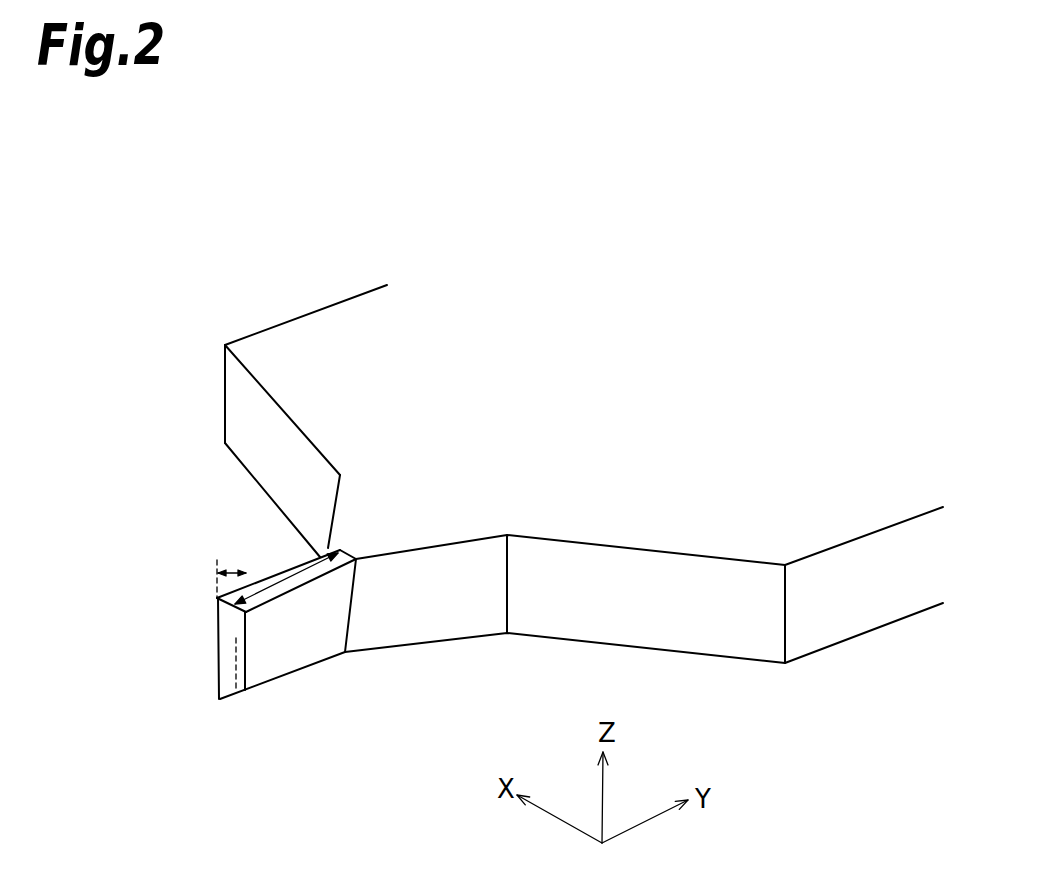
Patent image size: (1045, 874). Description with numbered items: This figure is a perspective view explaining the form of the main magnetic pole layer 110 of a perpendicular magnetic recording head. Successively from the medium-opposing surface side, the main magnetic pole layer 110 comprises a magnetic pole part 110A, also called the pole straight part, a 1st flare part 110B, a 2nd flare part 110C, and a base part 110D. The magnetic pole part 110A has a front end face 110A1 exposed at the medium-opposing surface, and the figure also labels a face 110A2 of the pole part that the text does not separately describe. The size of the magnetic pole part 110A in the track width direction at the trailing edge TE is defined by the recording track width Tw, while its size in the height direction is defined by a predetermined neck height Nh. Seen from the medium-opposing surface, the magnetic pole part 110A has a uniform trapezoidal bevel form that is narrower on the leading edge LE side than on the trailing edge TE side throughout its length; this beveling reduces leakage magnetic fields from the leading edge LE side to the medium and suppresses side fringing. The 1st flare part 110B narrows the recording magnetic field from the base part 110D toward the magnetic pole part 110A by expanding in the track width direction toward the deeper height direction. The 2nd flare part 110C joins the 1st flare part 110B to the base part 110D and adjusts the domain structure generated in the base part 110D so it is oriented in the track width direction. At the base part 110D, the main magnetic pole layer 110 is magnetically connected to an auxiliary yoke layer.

The main magnetic pole layer 110 is at (256, 484).
The magnetic pole part 110A is at (287, 565).
The front end face 110A1 is at (222, 676).
The tooth tip side face 110A2 is at (217, 661).
The 1st flare part 110B is at (347, 513).
The 2nd flare part 110C is at (287, 383).
The base part 110D is at (408, 328).
The trailing edge TE is at (217, 598).
The leading edge LE is at (224, 700).
The recording track width Tw is at (233, 570).
The neck height Nh is at (295, 580).